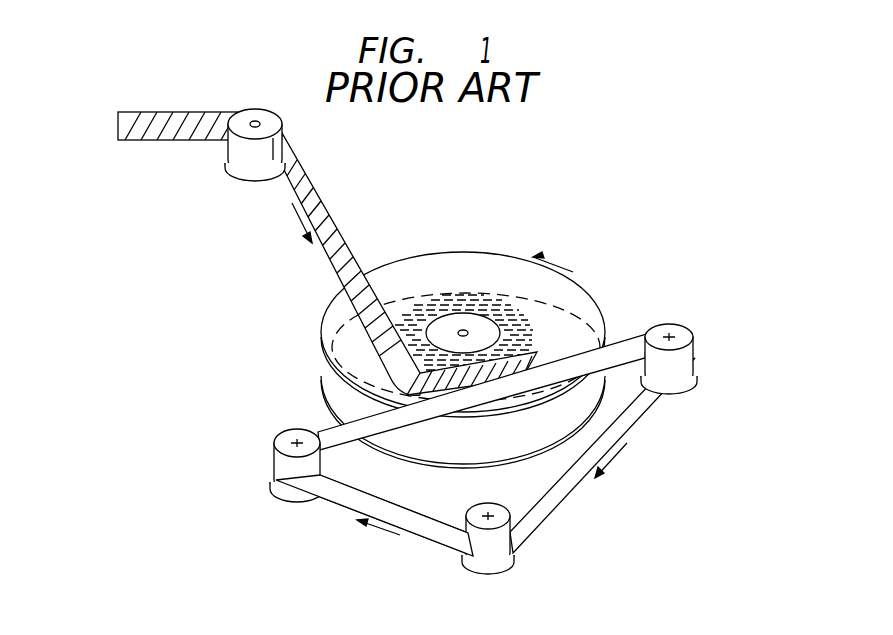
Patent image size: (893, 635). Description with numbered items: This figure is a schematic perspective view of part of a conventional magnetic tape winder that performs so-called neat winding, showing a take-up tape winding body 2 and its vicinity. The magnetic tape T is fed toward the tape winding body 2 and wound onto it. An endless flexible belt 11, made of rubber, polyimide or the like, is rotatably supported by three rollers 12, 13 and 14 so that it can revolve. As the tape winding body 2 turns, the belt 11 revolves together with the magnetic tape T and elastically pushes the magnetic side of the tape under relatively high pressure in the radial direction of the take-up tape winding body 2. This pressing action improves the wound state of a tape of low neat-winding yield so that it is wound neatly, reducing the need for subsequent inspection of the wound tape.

The tape winding body 2 is at (481, 266).
The magnetic tape T is at (328, 226).
The endless flexible belt 11 is at (326, 430).
The roller 12 is at (285, 440).
The roller 13 is at (682, 332).
The roller 14 is at (514, 511).